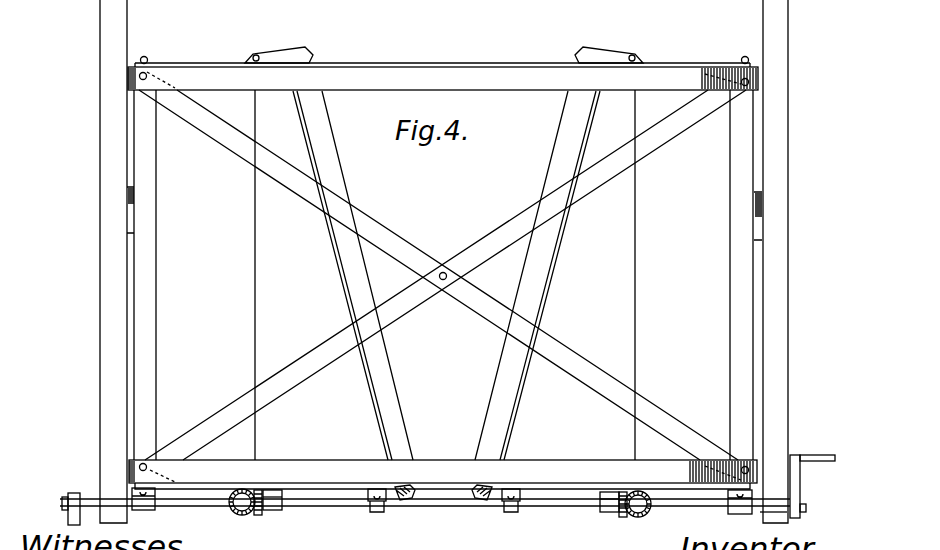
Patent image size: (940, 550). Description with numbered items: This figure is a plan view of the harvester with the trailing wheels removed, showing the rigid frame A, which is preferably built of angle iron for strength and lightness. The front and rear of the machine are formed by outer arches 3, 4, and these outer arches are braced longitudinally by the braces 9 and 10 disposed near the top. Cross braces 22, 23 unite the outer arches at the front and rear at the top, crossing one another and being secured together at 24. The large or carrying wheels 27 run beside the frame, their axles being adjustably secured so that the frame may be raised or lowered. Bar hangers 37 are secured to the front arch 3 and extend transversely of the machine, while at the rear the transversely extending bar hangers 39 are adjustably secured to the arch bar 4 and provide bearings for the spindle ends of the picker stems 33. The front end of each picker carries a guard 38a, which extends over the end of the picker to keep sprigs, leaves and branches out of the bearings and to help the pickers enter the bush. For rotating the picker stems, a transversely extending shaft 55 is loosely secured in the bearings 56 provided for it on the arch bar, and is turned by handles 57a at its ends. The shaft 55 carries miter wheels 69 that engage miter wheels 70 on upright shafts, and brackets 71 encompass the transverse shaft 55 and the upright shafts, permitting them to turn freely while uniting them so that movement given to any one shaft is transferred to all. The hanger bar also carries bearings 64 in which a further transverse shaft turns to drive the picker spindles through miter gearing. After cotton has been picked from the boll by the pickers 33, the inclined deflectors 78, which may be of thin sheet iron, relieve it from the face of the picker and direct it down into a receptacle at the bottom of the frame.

The outer arch 3 is at (446, 66).
The outer arch 4 is at (433, 460).
The longitudinal brace 9 is at (156, 272).
The longitudinal brace 10 is at (730, 250).
The cross brace 22 is at (378, 230).
The cross brace 23 is at (394, 314).
The securing point of cross braces 24 is at (445, 272).
The large or carrying wheel 27 is at (127, 163).
The picker stem 33 is at (334, 151).
The bar hanger 37 is at (195, 63).
The guard 38a is at (300, 50).
The bar hanger 39 is at (277, 489).
The transversely extending shaft 55 is at (443, 508).
The bearing 56 is at (146, 511).
The handle 57a is at (64, 503).
The bearing 64 is at (376, 512).
The miter wheel 69 is at (257, 516).
The miter wheel 70 is at (233, 511).
The bracket 71 is at (272, 511).
The deflector 78 is at (445, 275).
The frame A is at (430, 367).